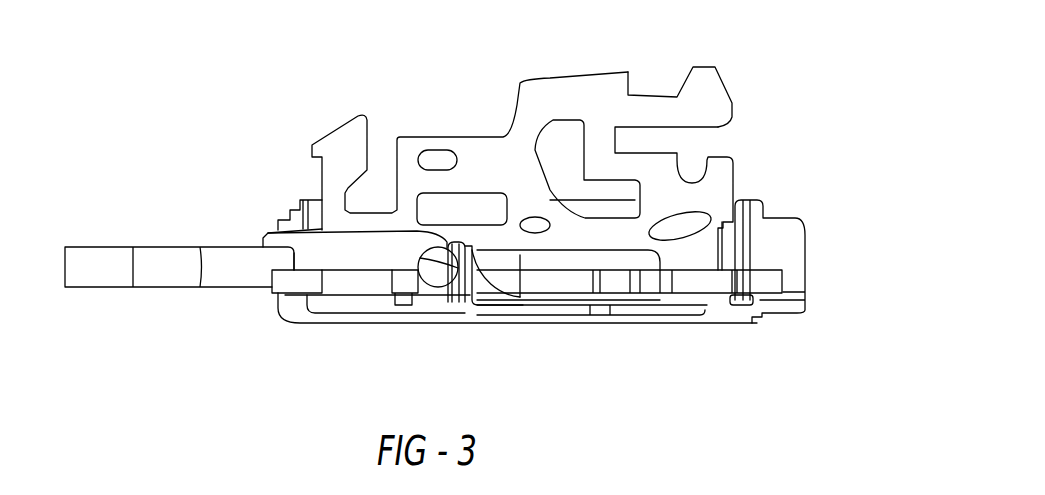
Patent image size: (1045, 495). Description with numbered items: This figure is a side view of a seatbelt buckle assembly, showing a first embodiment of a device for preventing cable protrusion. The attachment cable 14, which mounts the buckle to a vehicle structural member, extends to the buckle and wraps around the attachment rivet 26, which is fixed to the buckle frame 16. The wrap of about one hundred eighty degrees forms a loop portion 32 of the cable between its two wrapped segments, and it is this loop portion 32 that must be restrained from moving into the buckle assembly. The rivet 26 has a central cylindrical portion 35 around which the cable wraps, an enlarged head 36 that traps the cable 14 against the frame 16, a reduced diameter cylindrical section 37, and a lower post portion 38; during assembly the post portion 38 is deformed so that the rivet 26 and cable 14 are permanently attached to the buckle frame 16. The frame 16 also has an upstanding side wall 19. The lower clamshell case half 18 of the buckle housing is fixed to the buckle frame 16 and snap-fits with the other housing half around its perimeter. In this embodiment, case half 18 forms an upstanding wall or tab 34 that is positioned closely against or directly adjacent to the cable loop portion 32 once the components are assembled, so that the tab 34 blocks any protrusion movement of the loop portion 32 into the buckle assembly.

The attachment cable 14 is at (100, 288).
The buckle frame 16 is at (737, 173).
The case half 18 is at (737, 322).
The upstanding side wall 19 is at (705, 97).
The attachment rivet 26 is at (290, 258).
The loop portion 32 is at (427, 287).
The tab 34 is at (472, 265).
The central cylindrical portion 35 is at (455, 278).
The enlarged head 36 is at (277, 230).
The reduced diameter cylindrical section 37 is at (298, 295).
The lower post portion 38 is at (342, 303).